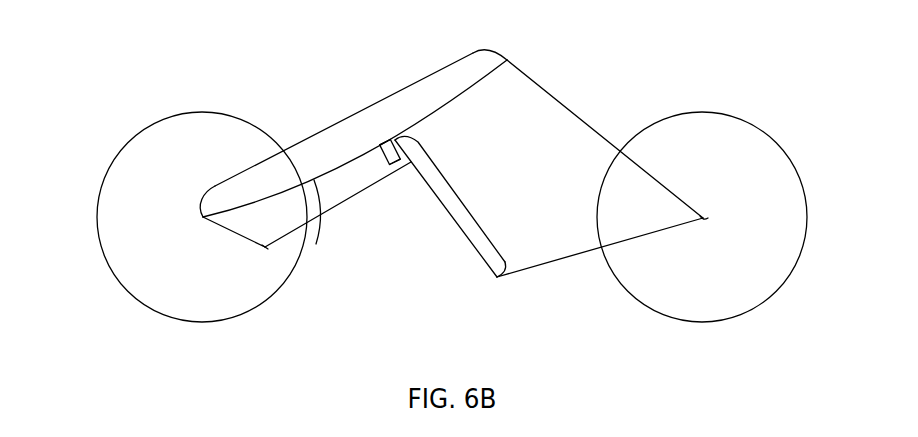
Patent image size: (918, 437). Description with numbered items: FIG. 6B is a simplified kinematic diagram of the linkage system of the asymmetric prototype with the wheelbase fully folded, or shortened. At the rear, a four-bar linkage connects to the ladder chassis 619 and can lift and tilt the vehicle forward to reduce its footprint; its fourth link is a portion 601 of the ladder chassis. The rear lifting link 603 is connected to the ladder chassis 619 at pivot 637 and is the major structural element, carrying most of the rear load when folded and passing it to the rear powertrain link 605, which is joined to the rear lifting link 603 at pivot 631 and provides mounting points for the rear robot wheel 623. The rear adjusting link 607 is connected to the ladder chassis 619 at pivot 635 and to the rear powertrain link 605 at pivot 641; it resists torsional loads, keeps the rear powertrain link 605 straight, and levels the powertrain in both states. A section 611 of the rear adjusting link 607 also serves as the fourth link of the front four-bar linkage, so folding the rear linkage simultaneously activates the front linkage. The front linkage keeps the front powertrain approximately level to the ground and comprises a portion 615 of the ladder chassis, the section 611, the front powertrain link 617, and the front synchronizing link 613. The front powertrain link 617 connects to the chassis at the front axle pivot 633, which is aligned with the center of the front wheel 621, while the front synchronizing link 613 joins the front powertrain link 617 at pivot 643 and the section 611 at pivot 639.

The portion of the ladder chassis 601 is at (343, 135).
The rear lifting link 603 is at (578, 117).
The rear powertrain link 605 is at (559, 260).
The rear adjusting link 607 is at (450, 219).
The section of the rear adjusting link 611 is at (359, 162).
The front synchronizing link 613 is at (340, 201).
The portion of the ladder chassis 615 is at (318, 226).
The front powertrain link 617 is at (232, 231).
The ladder chassis 619 is at (324, 129).
The front wheel 621 is at (180, 127).
The rear robot wheel 623 is at (748, 130).
The pivot 631 is at (706, 218).
The front axle pivot 633 is at (203, 217).
The pivot 635 is at (392, 141).
The pivot 637 is at (508, 58).
The pivot 639 is at (401, 162).
The pivot 641 is at (497, 278).
The pivot 643 is at (265, 248).